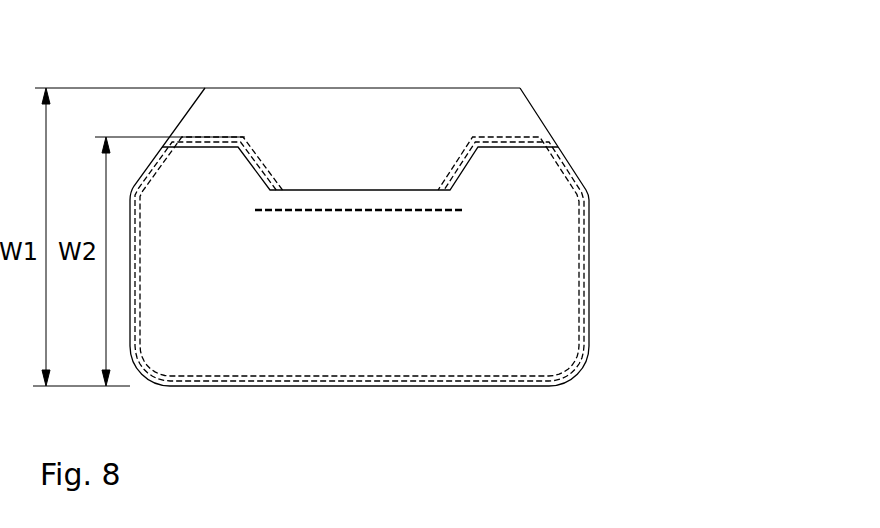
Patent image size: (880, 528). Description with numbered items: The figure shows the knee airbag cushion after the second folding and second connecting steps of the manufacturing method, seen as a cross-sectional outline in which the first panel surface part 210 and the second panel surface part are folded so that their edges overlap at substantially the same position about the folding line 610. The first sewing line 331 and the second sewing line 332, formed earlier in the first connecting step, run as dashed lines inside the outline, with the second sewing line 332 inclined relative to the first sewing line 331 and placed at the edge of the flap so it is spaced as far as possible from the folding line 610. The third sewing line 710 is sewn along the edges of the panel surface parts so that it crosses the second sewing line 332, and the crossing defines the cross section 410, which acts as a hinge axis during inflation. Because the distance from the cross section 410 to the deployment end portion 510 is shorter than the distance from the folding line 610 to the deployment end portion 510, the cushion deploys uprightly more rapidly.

The cross section 410 is at (178, 119).
The folding line 610 is at (358, 87).
The first sewing line 331 is at (461, 160).
The second sewing line 332 is at (508, 137).
The third sewing line 710 is at (590, 262).
The first panel surface part 210 is at (440, 247).
The deployment end portion 510 is at (380, 388).